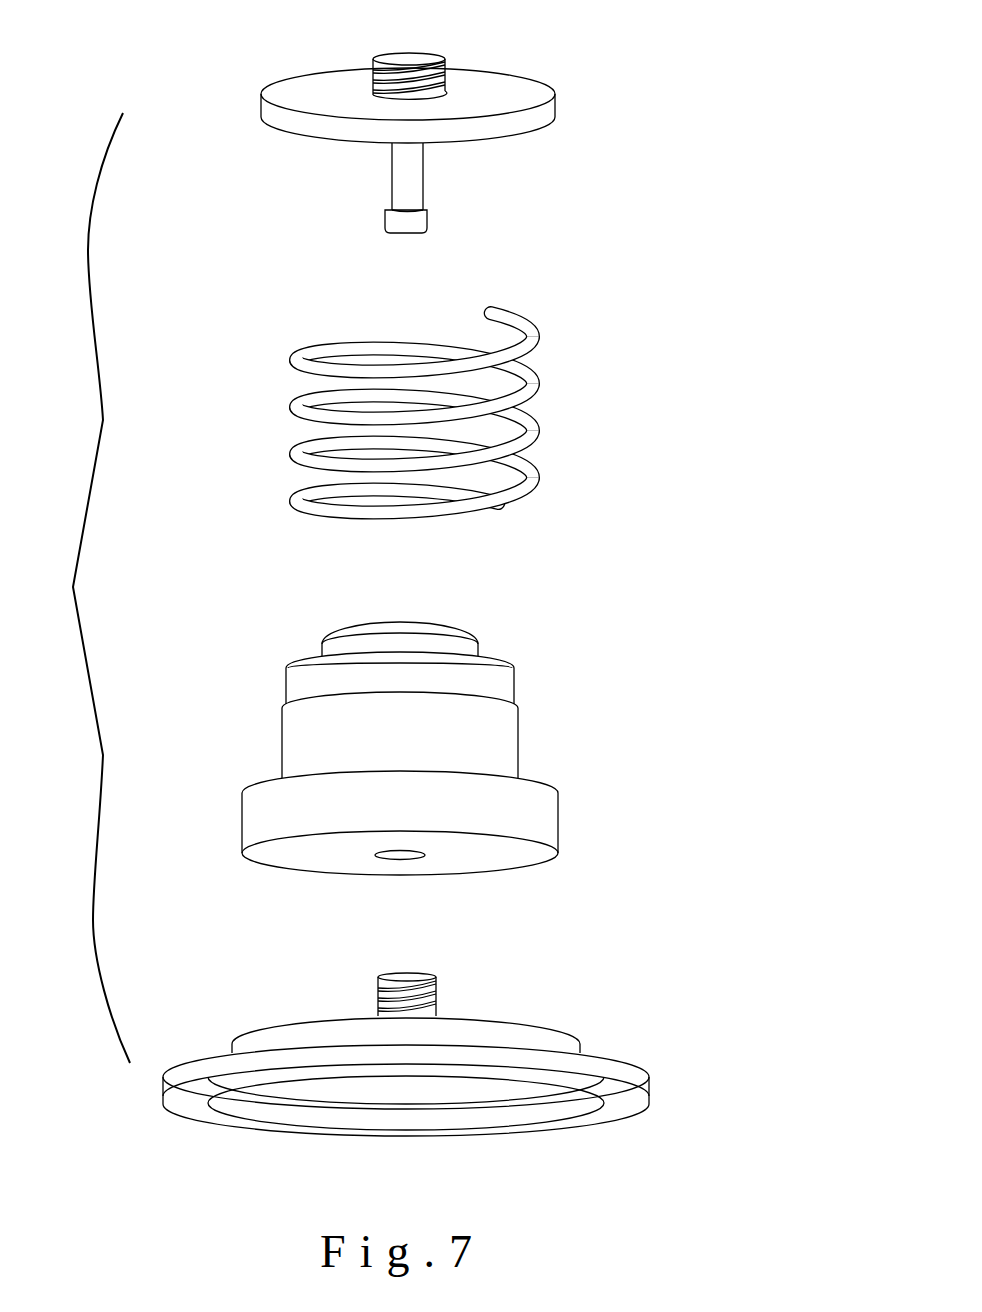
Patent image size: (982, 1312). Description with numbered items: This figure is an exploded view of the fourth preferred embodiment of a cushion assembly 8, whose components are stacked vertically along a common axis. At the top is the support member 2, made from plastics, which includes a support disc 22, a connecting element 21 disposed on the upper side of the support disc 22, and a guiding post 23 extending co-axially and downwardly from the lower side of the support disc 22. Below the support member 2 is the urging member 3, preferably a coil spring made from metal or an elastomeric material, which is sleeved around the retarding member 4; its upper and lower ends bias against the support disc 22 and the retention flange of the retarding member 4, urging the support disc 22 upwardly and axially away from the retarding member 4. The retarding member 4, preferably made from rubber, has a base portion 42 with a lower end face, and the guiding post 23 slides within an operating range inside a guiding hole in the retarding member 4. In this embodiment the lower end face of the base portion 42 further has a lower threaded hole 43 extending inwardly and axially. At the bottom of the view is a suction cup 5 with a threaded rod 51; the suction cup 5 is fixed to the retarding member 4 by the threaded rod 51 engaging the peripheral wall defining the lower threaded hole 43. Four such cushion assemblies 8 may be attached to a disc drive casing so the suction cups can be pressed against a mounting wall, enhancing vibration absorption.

The support member 2 is at (470, 122).
The connecting element 21 is at (415, 60).
The support disc 22 is at (513, 88).
The guiding post 23 is at (420, 197).
The urging member 3 is at (571, 402).
The retarding member 4 is at (436, 769).
The base portion 42 is at (547, 823).
The lower threaded hole 43 is at (398, 859).
The suction cup 5 is at (444, 1043).
The threaded rod 51 is at (437, 990).
The cushion assembly 8 is at (86, 588).